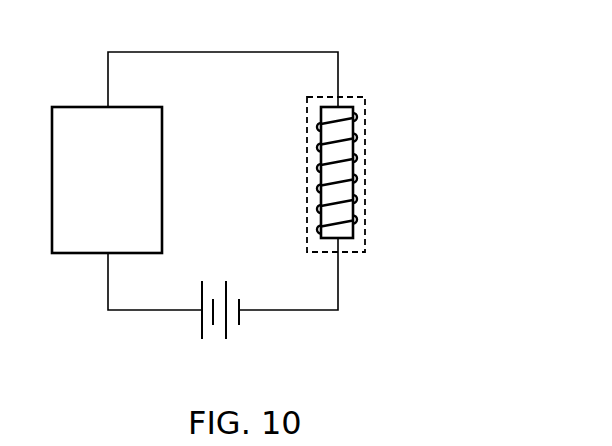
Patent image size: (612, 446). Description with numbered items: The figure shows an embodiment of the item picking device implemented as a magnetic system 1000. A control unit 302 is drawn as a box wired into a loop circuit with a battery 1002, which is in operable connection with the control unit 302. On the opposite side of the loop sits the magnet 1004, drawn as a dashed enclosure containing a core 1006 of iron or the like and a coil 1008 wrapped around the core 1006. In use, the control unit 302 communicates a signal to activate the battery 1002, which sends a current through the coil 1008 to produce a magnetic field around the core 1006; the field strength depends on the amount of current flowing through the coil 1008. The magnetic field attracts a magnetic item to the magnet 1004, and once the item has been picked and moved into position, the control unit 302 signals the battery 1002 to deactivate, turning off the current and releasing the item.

The magnetic system 1000 is at (347, 64).
The control unit 302 is at (126, 221).
The battery 1002 is at (239, 317).
The magnet 1004 is at (367, 242).
The core 1006 is at (347, 108).
The coil 1008 is at (355, 170).